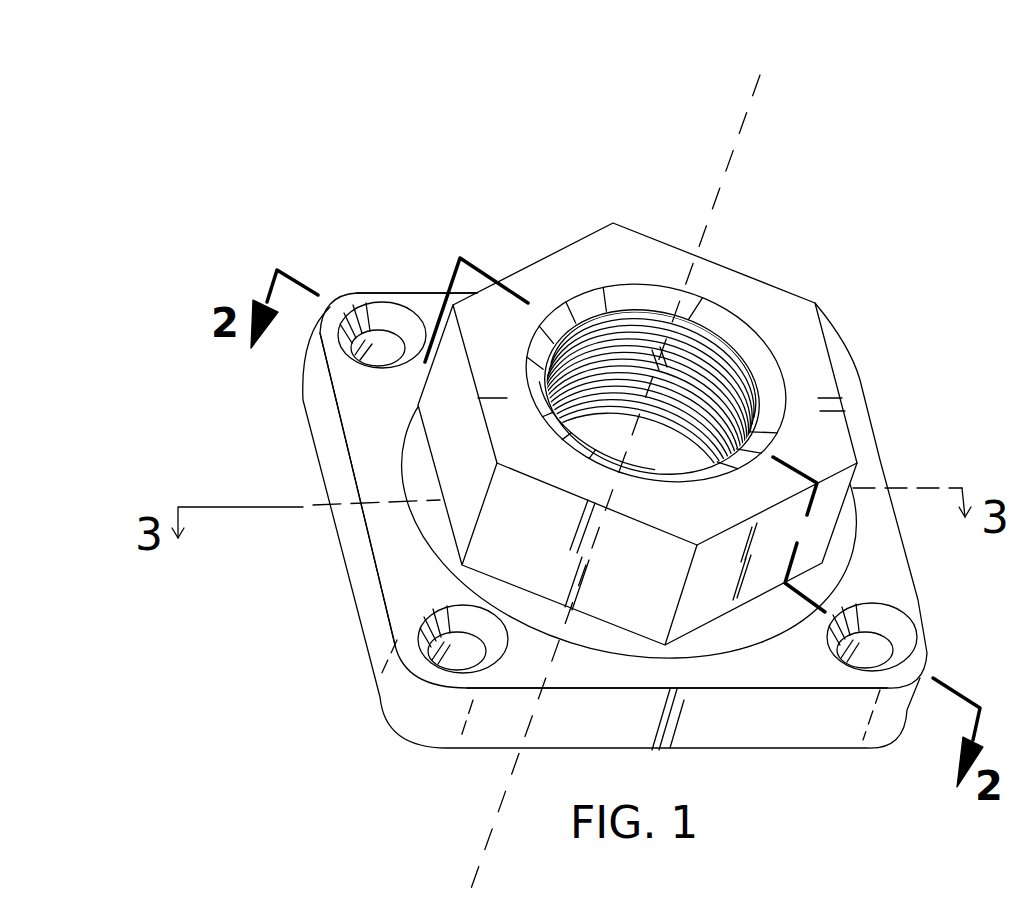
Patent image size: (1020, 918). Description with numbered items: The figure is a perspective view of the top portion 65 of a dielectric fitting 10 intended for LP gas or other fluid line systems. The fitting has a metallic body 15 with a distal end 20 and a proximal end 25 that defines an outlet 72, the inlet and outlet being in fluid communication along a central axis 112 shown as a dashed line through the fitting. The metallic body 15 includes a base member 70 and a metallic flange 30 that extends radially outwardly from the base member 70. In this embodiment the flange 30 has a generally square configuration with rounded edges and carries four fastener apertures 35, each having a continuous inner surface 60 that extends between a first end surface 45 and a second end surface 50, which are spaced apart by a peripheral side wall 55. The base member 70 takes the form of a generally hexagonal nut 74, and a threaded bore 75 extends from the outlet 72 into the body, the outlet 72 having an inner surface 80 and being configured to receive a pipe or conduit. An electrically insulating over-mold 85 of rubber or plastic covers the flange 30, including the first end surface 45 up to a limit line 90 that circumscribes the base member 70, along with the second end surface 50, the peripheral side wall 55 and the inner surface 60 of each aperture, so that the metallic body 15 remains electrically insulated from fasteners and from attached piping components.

The dielectric fitting 10 is at (920, 126).
The metallic body 15 is at (553, 277).
The distal end 20 is at (362, 635).
The proximal end 25 is at (633, 252).
The metallic flange 30 is at (370, 460).
The fastener apertures 35 is at (372, 343).
The first end surface 45 is at (620, 637).
The second end surface 50 is at (833, 750).
The peripheral side wall 55 is at (507, 750).
The inner surface 60 is at (387, 343).
The top portion 65 is at (898, 285).
The base member 70 is at (818, 398).
The outlet 72 is at (740, 338).
The hexagonal nut 74 is at (823, 450).
The threaded bore 75 is at (740, 405).
The inner surface 80 is at (713, 358).
The insulation over-mold 85 is at (395, 505).
The limit line 90 is at (838, 577).
The central axis 112 is at (747, 127).